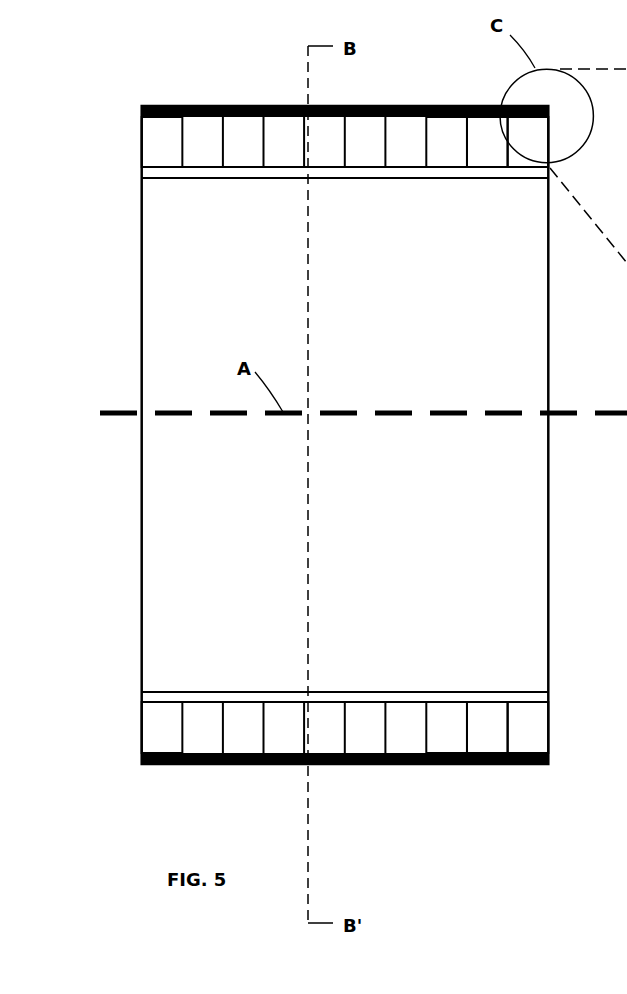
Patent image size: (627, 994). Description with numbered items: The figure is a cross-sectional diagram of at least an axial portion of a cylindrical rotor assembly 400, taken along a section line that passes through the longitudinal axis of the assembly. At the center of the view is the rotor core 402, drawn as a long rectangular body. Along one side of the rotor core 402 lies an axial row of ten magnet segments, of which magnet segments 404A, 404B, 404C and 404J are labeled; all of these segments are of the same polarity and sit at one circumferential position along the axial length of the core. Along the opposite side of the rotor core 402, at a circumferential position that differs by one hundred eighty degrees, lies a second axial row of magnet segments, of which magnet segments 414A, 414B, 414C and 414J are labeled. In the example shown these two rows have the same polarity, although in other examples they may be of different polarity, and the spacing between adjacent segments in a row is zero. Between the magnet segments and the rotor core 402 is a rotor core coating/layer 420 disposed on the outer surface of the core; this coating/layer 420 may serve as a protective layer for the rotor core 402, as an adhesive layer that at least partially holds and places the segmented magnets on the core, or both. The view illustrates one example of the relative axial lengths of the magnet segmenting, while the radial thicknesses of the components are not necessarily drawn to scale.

The rotor assembly 400 is at (232, 73).
The rotor core 402 is at (412, 471).
The magnet segment 404A is at (520, 153).
The magnet segment 404B is at (483, 143).
The magnet segment 404C is at (442, 153).
The magnet segment 404J is at (160, 152).
The magnet segment 414A is at (518, 735).
The magnet segment 414B is at (483, 725).
The magnet segment 414C is at (440, 735).
The magnet segment 414J is at (160, 735).
The rotor core coating/layer 420 is at (512, 691).